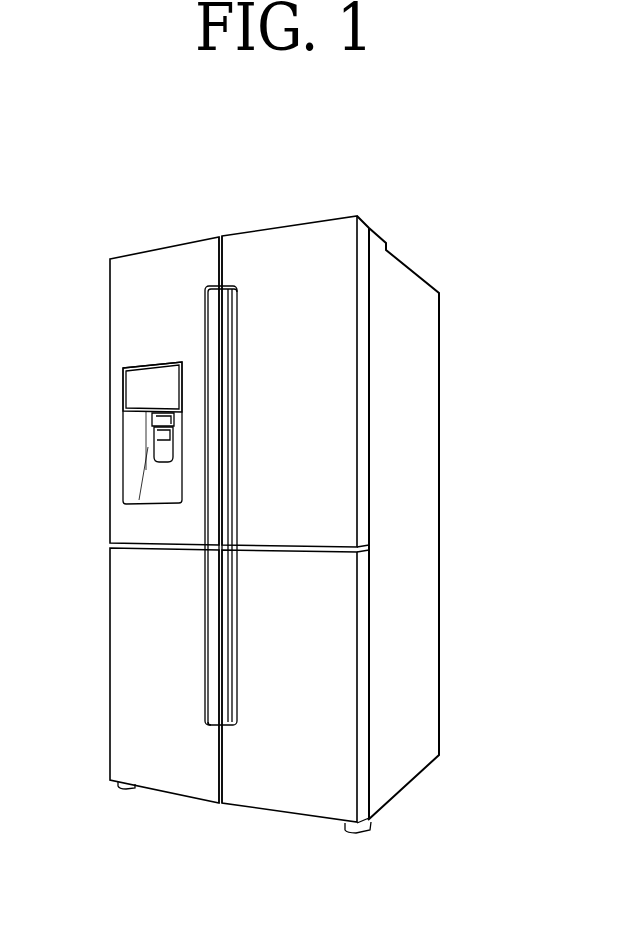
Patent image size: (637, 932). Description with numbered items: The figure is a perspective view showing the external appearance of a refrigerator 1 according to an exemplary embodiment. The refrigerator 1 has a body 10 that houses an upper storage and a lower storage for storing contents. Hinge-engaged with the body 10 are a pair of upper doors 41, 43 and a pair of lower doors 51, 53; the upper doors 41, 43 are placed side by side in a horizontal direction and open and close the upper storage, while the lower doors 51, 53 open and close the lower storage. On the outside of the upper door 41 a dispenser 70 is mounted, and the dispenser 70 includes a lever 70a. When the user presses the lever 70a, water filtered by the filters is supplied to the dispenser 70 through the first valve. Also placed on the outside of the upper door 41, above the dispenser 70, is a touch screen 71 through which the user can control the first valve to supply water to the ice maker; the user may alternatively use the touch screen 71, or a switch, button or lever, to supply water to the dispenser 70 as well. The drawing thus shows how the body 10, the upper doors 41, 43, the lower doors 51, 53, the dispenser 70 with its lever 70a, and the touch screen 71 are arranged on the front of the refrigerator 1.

The refrigerator 1 is at (338, 159).
The body 10 is at (430, 385).
The upper door 41 is at (116, 318).
The upper door 43 is at (343, 316).
The lower door 51 is at (116, 658).
The lower door 53 is at (343, 690).
The dispenser 70 is at (141, 450).
The lever 70a is at (160, 460).
The touch screen 71 is at (132, 390).